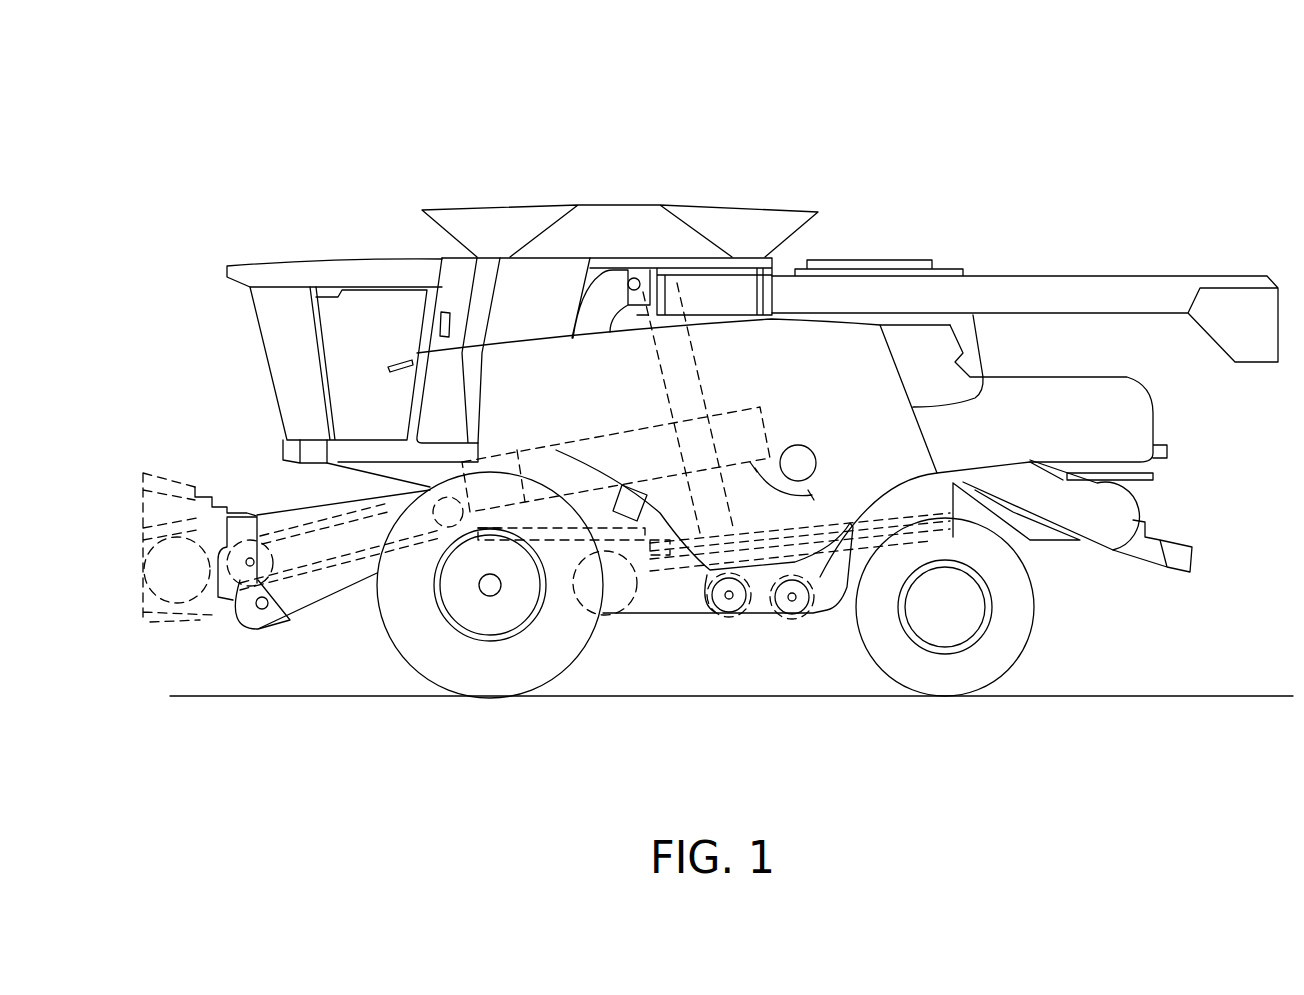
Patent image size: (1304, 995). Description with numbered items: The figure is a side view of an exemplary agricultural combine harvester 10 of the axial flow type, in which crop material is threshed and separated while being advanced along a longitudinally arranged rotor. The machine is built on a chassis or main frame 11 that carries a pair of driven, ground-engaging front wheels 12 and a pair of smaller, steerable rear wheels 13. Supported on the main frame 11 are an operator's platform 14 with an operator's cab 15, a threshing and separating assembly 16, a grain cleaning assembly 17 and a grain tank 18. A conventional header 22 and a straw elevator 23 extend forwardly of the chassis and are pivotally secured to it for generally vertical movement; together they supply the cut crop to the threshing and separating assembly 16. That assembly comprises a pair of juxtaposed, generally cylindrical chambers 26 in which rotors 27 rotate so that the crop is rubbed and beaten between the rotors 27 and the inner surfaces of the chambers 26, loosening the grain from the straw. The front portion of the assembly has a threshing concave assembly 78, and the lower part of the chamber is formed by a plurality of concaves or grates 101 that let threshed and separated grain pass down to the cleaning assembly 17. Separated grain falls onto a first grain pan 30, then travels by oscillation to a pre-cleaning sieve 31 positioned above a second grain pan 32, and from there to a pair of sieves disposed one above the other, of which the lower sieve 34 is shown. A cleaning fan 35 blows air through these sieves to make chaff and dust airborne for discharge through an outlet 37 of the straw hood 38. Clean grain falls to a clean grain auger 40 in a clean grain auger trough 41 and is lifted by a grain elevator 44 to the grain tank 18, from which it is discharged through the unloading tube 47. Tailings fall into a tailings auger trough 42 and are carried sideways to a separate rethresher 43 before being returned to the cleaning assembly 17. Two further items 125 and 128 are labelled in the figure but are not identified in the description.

The combine harvester 10 is at (927, 155).
The chassis or main frame 11 is at (958, 508).
The front wheels 12 is at (417, 642).
The rear wheels 13 is at (1010, 627).
The operator's platform 14 is at (362, 453).
The operator's cab 15 is at (293, 367).
The threshing and separating assembly 16 is at (732, 400).
The grain cleaning assembly 17 is at (691, 622).
The grain tank 18 is at (492, 228).
The header 22 is at (202, 620).
The straw elevator 23 is at (310, 518).
The chambers 26 is at (770, 410).
The rotors 27 is at (592, 435).
The first grain pan 30 is at (587, 601).
The pre-cleaning sieve 31 is at (704, 531).
The second grain pan 32 is at (667, 557).
The sieve 34 is at (938, 472).
The cleaning fan 35 is at (557, 540).
The outlet 37 is at (1182, 558).
The straw hood 38 is at (1128, 422).
The clean grain auger 40 is at (730, 607).
The clean grain auger trough 41 is at (750, 597).
The tailings auger trough 42 is at (813, 610).
The rethresher 43 is at (793, 610).
The grain elevator 44 is at (683, 307).
The unloading tube 47 is at (1077, 275).
The threshing concave assembly 78 is at (487, 488).
The concaves or grates 101 is at (627, 470).
The return conveyor 125 is at (820, 520).
The beater 128 is at (815, 455).